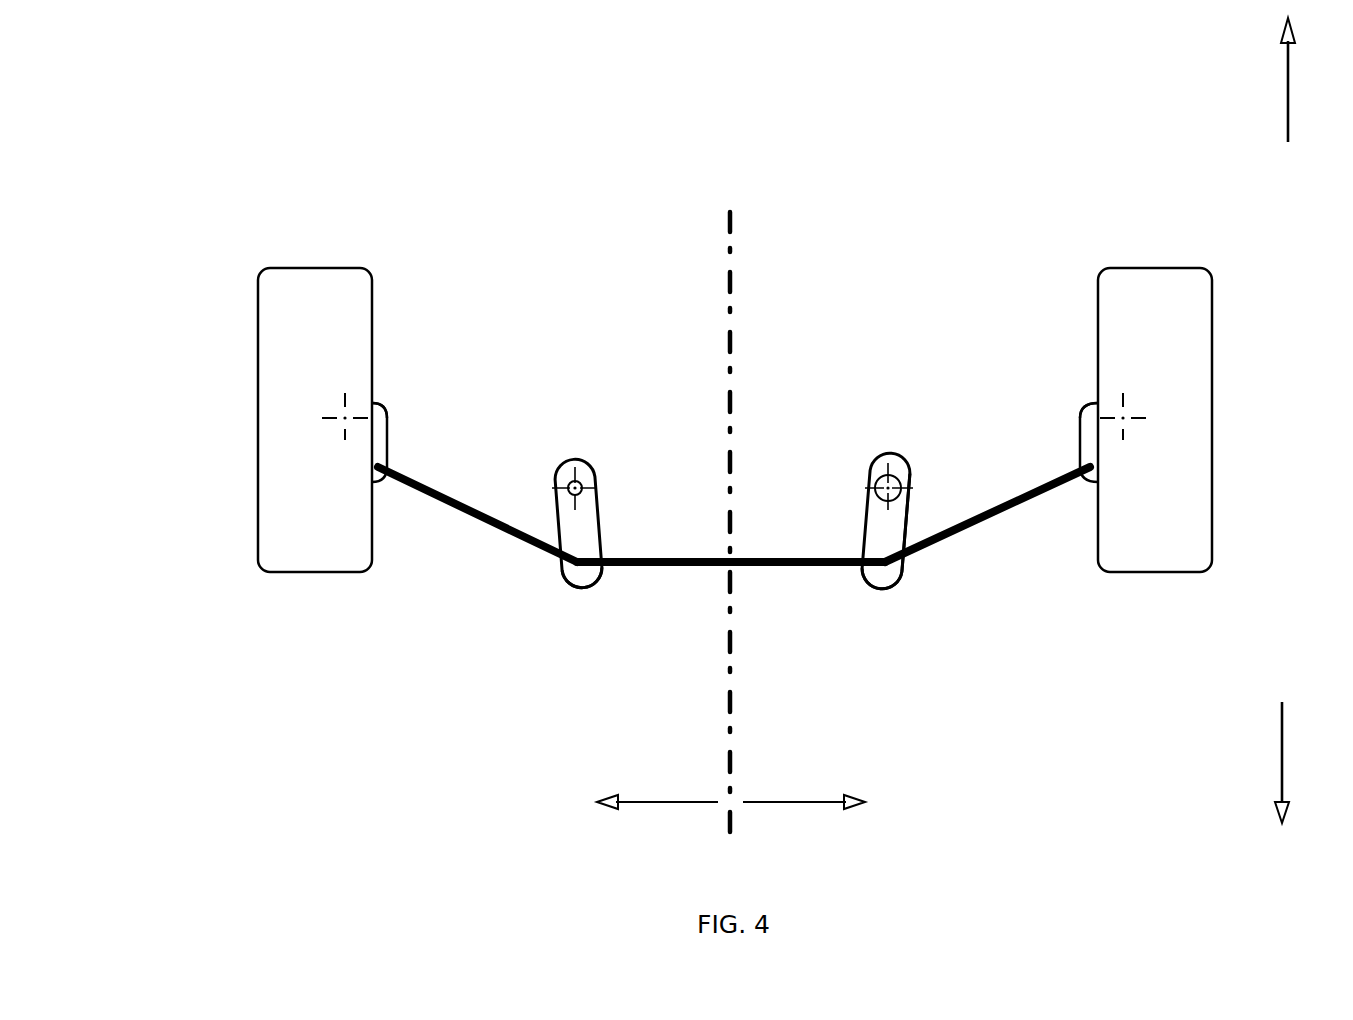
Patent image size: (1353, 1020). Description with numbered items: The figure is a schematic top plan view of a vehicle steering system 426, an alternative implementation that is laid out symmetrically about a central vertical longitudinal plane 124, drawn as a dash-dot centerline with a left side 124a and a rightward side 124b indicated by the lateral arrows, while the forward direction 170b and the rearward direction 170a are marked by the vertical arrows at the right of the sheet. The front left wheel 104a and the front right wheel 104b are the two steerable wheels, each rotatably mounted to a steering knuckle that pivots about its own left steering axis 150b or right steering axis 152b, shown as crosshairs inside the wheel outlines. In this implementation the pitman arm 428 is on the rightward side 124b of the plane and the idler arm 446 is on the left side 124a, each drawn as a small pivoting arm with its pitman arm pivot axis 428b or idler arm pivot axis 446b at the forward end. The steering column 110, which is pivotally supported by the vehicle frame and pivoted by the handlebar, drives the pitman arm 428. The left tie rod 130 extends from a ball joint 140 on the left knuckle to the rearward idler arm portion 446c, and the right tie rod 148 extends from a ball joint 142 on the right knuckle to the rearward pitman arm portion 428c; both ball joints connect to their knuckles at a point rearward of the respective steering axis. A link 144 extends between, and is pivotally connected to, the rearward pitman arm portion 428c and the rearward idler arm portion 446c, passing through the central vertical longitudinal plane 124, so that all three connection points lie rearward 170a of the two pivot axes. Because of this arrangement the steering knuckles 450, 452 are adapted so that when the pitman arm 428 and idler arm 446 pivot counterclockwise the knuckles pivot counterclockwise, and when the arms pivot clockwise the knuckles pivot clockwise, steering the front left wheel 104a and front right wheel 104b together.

The vehicle steering system 426 is at (217, 58).
The front left wheel 104a is at (278, 303).
The front right wheel 104b is at (1188, 297).
The left steering axis 150b is at (335, 413).
The right steering axis 152b is at (1138, 415).
The ball joint 140 is at (387, 463).
The ball joint 142 is at (1084, 440).
The steering knuckle 450 is at (385, 403).
The steering knuckle 452 is at (1092, 405).
The left tie rod 130 is at (470, 517).
The link 144 is at (797, 567).
The right tie rod 148 is at (992, 517).
The idler arm 446 is at (580, 582).
The idler arm pivot axis 446b is at (563, 463).
The rearward idler arm portion 446c is at (585, 525).
The pitman arm 428 is at (872, 582).
The pitman arm pivot axis 428b is at (885, 468).
The rearward pitman arm portion 428c is at (875, 527).
The steering column 110 is at (907, 463).
The central vertical longitudinal plane 124 is at (728, 272).
The left side 124a is at (660, 803).
The rightward side 124b is at (793, 803).
The rearward direction 170a is at (1281, 767).
The forward direction 170b is at (1287, 85).